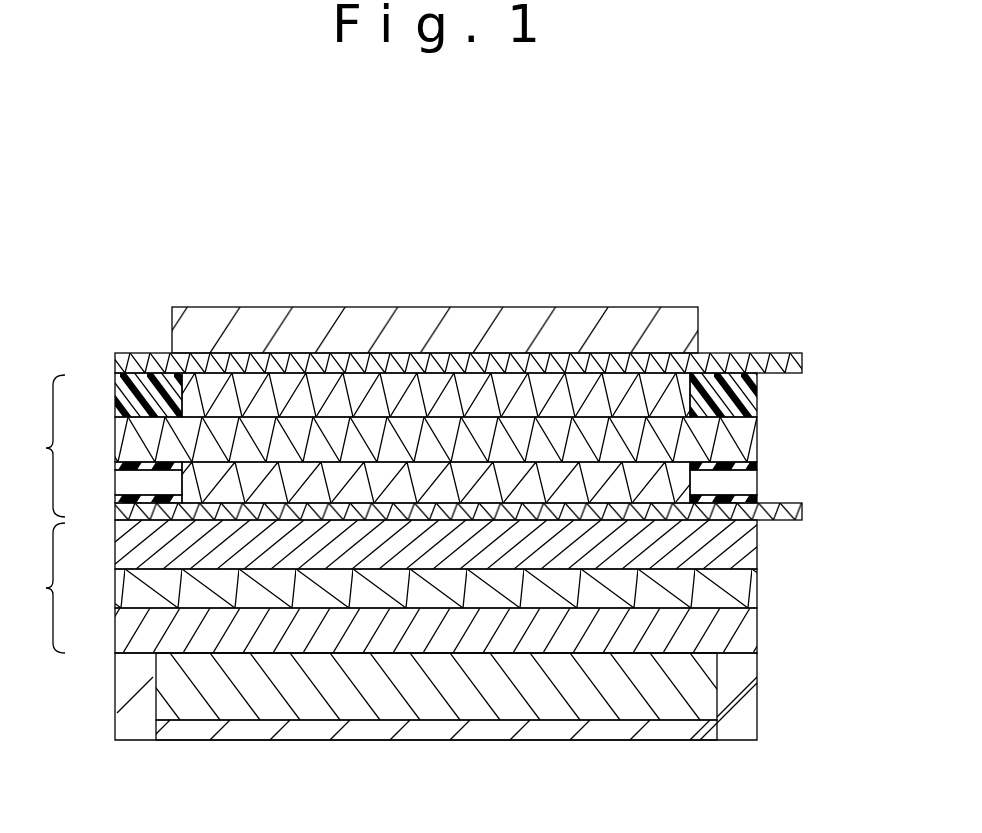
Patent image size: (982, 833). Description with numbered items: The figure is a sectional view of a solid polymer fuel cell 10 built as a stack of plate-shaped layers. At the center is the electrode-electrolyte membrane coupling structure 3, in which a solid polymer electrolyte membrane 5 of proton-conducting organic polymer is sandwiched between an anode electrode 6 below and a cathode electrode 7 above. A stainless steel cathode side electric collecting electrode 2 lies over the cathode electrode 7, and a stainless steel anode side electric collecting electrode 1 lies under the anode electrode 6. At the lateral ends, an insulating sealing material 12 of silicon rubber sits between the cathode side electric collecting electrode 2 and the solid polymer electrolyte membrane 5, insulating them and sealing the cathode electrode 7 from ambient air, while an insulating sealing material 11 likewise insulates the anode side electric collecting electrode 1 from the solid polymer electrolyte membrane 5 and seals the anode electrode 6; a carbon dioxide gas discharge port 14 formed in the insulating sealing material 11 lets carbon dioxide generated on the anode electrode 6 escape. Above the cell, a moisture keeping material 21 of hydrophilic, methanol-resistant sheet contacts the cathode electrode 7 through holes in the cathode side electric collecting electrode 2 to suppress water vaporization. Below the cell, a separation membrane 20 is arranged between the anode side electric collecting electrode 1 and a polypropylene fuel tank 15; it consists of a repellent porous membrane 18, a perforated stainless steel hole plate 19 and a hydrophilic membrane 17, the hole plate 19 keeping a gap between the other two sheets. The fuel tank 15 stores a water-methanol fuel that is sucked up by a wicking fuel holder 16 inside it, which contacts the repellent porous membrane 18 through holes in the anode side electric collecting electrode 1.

The solid polymer fuel cell 10 is at (645, 217).
The moisture keeping material 21 is at (480, 318).
The cathode side electric collecting electrode 2 is at (775, 357).
The cathode electrode 7 is at (397, 397).
The insulating sealing material 12 is at (747, 395).
The solid polymer electrolyte membrane 5 is at (327, 432).
The anode electrode 6 is at (197, 483).
The insulating sealing material 11 is at (747, 465).
The carbon dioxide gas discharge port 14 is at (745, 480).
The anode side electric collecting electrode 1 is at (800, 512).
The electrode-electrolyte membrane coupling structure 3 is at (45, 446).
The repellent porous membrane 18 is at (740, 545).
The hole plate 19 is at (730, 588).
The hydrophilic membrane 17 is at (730, 628).
The separation membrane 20 is at (39, 588).
The fuel tank 15 is at (220, 722).
The fuel holder 16 is at (432, 705).